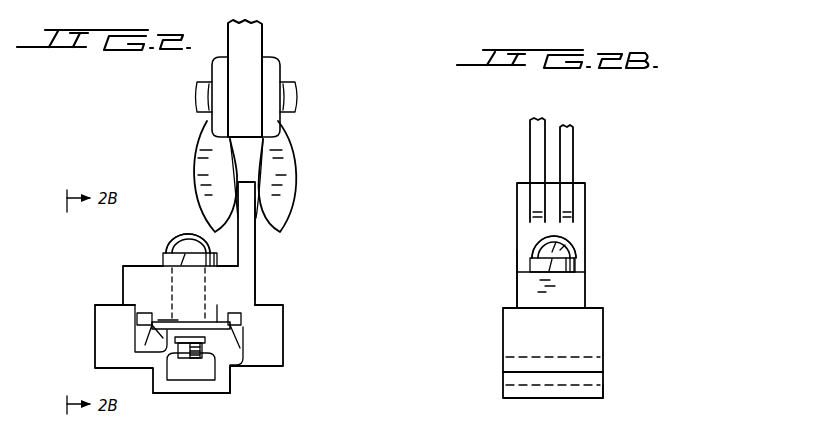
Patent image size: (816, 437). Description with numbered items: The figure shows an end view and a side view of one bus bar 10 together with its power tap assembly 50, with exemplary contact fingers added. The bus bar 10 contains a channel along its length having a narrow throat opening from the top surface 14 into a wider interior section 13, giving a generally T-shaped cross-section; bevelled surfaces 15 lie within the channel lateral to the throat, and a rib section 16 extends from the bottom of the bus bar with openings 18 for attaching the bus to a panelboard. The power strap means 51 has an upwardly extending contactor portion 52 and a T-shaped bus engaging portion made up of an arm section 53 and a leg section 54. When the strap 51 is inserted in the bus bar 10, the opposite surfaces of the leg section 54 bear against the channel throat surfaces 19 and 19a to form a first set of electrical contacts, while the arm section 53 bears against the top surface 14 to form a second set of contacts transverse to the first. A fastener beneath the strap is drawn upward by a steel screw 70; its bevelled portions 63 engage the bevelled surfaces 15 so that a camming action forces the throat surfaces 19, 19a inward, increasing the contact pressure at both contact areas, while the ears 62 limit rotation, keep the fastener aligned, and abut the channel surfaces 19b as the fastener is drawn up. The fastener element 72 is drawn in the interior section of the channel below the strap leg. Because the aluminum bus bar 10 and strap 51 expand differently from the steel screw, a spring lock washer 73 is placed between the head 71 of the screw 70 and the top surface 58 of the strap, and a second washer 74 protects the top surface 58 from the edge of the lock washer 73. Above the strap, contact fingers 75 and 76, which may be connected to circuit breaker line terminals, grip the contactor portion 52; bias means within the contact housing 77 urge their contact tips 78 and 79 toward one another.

In FIG. 2, the bus bar 10 is at (290, 348).
In FIG. 2B, the bus bar 10 is at (608, 347).
In FIG. 2, the interior section 13 is at (232, 360).
In FIG. 2, the top surface 14 is at (100, 304).
In FIG. 2B, the top surface 14 is at (600, 308).
In FIG. 2, the bevelled surfaces 15 is at (152, 313).
In FIG. 2, the rib section 16 is at (224, 390).
In FIG. 2B, the rib section 16 is at (592, 397).
In FIG. 2, the openings 18 is at (190, 378).
In FIG. 2B, the openings 18 is at (556, 398).
In FIG. 2, the channel throat surface 19 is at (164, 322).
In FIG. 2, the channel throat surface 19a is at (215, 315).
In FIG. 2, the channel surfaces 19b is at (140, 340).
In FIG. 2, the power tap assembly 50 is at (313, 254).
In FIG. 2, the power strap means 51 is at (118, 277).
In FIG. 2B, the power strap means 51 is at (516, 288).
In FIG. 2, the contactor portion 52 is at (255, 243).
In FIG. 2B, the contactor portion 52 is at (586, 200).
In FIG. 2, the arm section 53 is at (235, 278).
In FIG. 2B, the arm section 53 is at (578, 287).
In FIG. 2, the leg section 54 is at (150, 330).
In FIG. 2, the top surface 58 is at (140, 267).
In FIG. 2B, the top surface 58 is at (578, 266).
In FIG. 2, the ears 62 is at (137, 317).
In FIG. 2, the bevelled portions 63 is at (156, 331).
In FIG. 2, the screw 70 is at (165, 248).
In FIG. 2B, the screw 70 is at (632, 243).
In FIG. 2, the head 71 is at (190, 238).
In FIG. 2B, the head 71 is at (572, 247).
In FIG. 2, the screw 72 is at (192, 358).
In FIG. 2B, the spring lock washer 73 is at (531, 262).
In FIG. 2B, the second washer 74 is at (540, 268).
In FIG. 2, the contact finger 75 is at (210, 162).
In FIG. 2, the contact finger 76 is at (290, 162).
In FIG. 2B, the contact finger 76 is at (543, 129).
In FIG. 2, the contact housing 77 is at (270, 70).
In FIG. 2, the contact tip 78 is at (238, 200).
In FIG. 2, the contact tip 79 is at (255, 203).